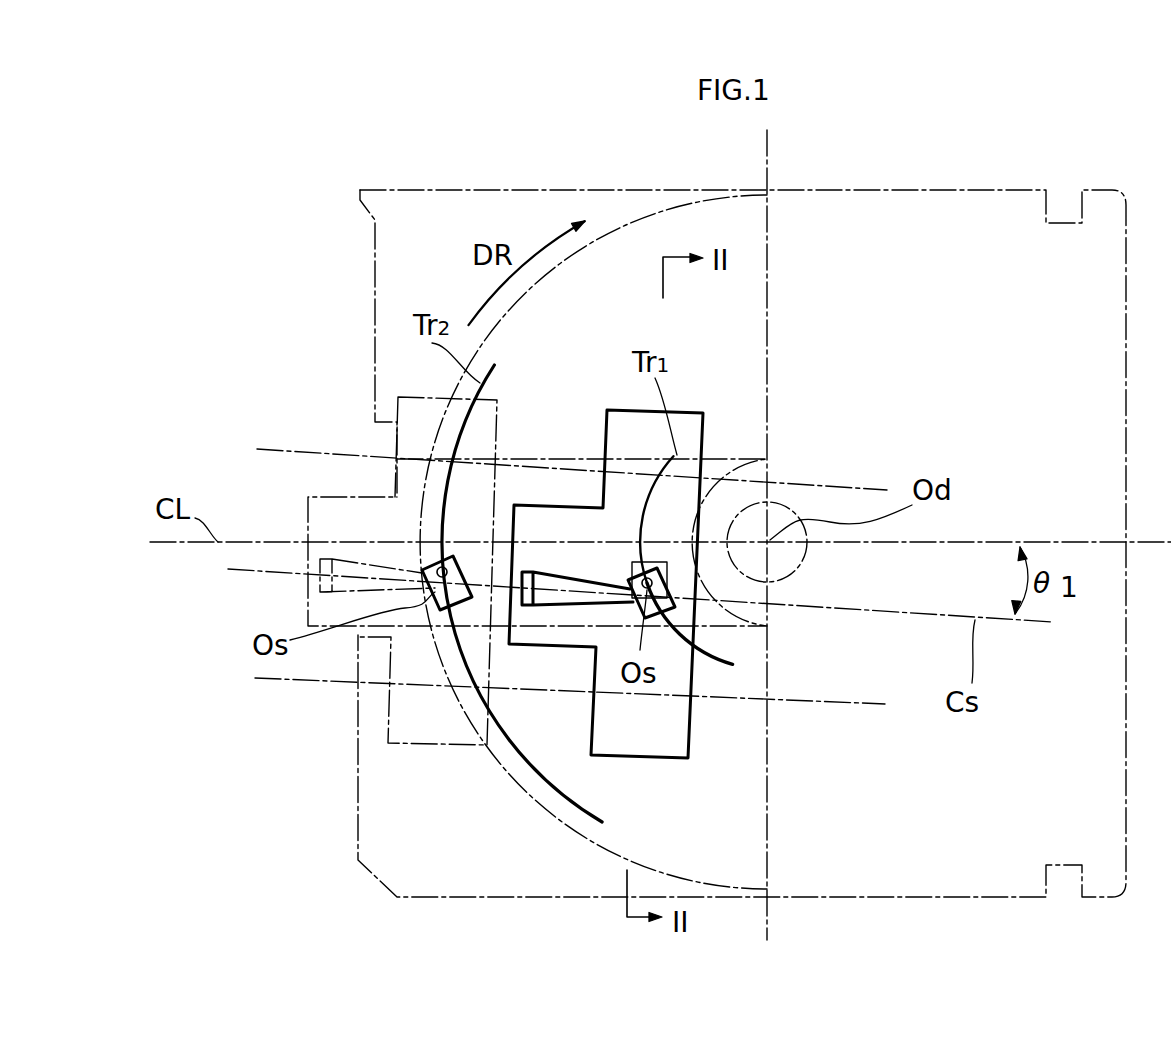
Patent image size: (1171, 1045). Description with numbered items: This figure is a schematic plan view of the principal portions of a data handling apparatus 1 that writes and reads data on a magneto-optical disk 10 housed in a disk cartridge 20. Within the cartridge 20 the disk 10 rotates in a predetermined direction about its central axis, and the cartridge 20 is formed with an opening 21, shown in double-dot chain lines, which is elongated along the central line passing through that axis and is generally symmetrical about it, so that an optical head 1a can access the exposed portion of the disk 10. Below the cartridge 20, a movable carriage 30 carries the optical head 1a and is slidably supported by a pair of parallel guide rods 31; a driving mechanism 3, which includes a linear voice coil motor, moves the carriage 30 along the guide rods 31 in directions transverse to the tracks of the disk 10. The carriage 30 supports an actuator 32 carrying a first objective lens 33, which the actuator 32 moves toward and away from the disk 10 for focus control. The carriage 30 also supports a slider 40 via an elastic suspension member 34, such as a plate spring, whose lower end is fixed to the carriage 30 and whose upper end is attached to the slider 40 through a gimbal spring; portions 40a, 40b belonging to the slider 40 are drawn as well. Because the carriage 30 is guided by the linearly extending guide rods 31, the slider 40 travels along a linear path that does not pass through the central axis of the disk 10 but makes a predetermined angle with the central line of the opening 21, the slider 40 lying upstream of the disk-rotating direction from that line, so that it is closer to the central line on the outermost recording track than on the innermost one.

The data handling apparatus 1 is at (678, 518).
The optical head 1a is at (422, 635).
The driving mechanism 3 is at (600, 619).
The magneto-optical disk 10 is at (632, 222).
The disk cartridge 20 is at (837, 193).
The opening 21 is at (575, 462).
The movable carriage 30 is at (628, 758).
The guide rods 31 is at (743, 476).
The actuator 32 is at (650, 560).
The first objective lens 33 is at (628, 580).
The elastic suspension member 34 is at (557, 607).
The slider 40 is at (709, 587).
The arm portion 40a is at (655, 628).
The bearing portion 40b is at (637, 560).